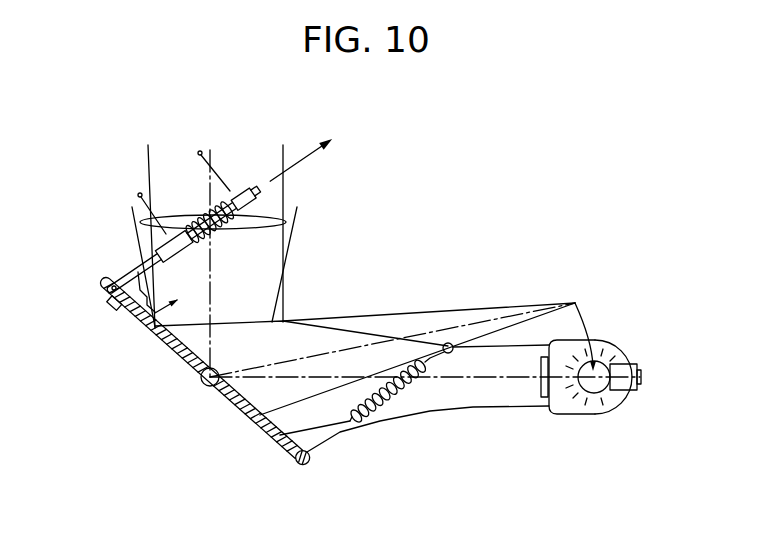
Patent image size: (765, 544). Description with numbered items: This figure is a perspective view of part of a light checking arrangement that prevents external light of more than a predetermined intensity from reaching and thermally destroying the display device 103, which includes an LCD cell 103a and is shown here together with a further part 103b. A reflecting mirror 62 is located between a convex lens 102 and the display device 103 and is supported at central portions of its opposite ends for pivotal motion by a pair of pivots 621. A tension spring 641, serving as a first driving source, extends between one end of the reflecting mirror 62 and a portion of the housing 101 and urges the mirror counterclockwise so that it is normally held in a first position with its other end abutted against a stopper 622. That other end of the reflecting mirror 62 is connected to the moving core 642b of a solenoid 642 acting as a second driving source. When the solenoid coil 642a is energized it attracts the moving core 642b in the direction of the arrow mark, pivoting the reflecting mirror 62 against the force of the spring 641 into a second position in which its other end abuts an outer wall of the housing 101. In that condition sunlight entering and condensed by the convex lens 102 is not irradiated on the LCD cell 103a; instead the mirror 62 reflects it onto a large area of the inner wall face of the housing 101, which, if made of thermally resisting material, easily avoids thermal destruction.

The reflecting mirror 62 is at (250, 418).
The pivots 621 is at (203, 387).
The stopper 622 is at (114, 308).
The tension spring 641 is at (383, 410).
The solenoid 642 is at (182, 198).
The solenoid coil 642a is at (206, 195).
The moving core 642b is at (250, 187).
The housing 101 is at (437, 413).
The convex lens 102 is at (270, 215).
The display device 103 is at (585, 413).
The LCD cell 103a is at (542, 398).
The lamp 103b is at (598, 390).